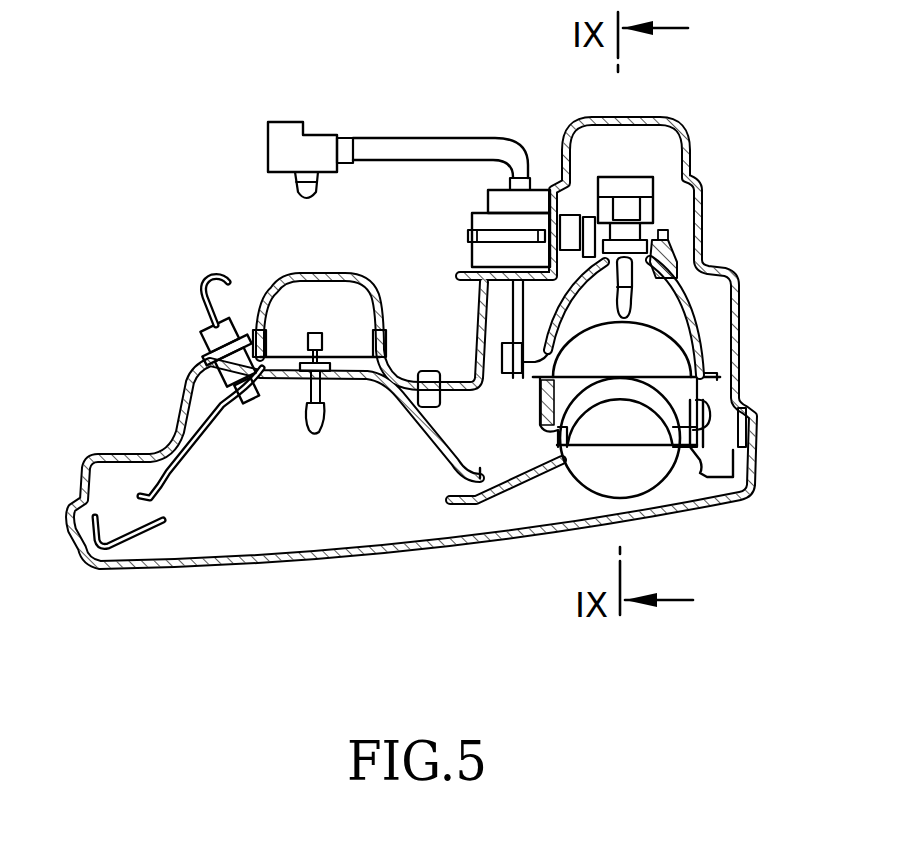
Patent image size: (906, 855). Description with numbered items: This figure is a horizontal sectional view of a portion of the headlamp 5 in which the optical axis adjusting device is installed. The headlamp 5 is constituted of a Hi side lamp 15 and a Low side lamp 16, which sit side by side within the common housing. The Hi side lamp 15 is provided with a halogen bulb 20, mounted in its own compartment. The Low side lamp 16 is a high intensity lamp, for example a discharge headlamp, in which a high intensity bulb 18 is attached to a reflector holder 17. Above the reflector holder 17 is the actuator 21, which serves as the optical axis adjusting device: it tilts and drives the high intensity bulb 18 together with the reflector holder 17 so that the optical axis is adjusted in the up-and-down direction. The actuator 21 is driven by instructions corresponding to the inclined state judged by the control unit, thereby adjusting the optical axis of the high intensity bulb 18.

The headlamp 5 is at (176, 296).
The Hi side lamp 15 is at (368, 490).
The Low side lamp 16 is at (553, 497).
The reflector holder 17 is at (688, 303).
The high intensity bulb 18 is at (627, 308).
The halogen bulb 20 is at (315, 422).
The actuator 21 is at (477, 257).